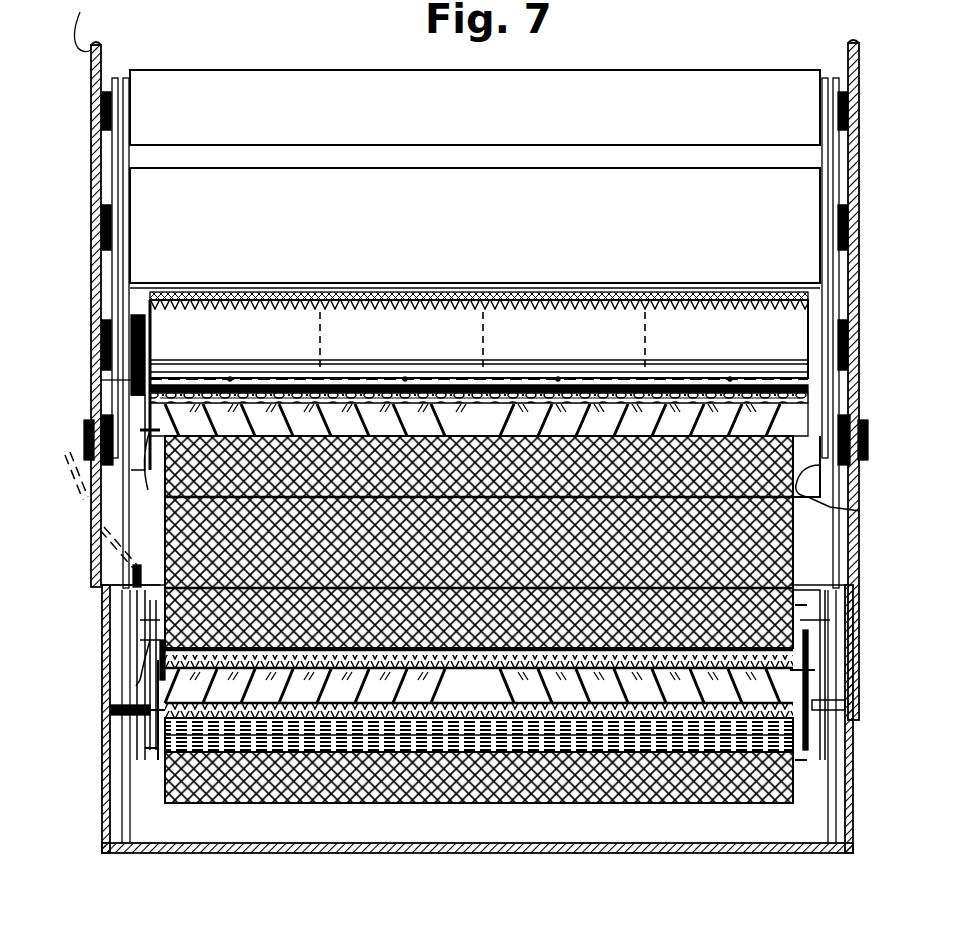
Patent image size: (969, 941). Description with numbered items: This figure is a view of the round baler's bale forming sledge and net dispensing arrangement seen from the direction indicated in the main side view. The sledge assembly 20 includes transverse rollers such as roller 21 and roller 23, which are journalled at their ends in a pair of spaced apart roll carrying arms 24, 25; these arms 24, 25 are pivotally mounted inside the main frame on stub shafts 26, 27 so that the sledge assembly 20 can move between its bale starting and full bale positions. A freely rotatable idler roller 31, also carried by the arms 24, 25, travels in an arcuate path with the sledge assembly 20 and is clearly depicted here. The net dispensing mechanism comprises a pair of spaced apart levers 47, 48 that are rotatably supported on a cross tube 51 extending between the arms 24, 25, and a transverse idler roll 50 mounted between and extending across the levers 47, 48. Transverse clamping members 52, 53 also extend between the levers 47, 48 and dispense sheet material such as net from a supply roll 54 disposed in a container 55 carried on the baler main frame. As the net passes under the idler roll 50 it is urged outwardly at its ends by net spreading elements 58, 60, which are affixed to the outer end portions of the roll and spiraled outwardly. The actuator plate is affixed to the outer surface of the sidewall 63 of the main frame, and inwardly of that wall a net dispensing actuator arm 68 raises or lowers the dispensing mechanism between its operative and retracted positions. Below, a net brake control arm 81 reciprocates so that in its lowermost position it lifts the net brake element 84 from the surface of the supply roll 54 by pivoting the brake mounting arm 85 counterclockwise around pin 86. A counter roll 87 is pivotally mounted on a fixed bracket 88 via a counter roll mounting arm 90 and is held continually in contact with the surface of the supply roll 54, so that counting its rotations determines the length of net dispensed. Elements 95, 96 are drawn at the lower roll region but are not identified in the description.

The sledge assembly 20 is at (108, 275).
The roller 21 is at (366, 221).
The roller 23 is at (808, 492).
The roll carrying arm 24 is at (113, 171).
The roll carrying arm 25 is at (816, 154).
The stub shaft 26 is at (82, 448).
The stub shaft 27 is at (868, 420).
The idler roller 31 is at (690, 112).
The lever 47 is at (150, 490).
The lever 48 is at (860, 504).
The idler roll 50 is at (494, 413).
The cross tube 51 is at (147, 300).
The clamping member 52 is at (360, 348).
The clamping member 53 is at (438, 382).
The supply roll 54 is at (627, 803).
The container 55 is at (98, 840).
The net spreading element 58 is at (436, 390).
The net spreading element 60 is at (652, 412).
The sidewall 63 is at (84, 16).
The net dispensing actuator arm 68 is at (100, 380).
The net brake control arm 81 is at (92, 513).
The net brake element 84 is at (798, 805).
The brake mounting arm 85 is at (150, 698).
The pin 86 is at (138, 670).
The counter roll 87 is at (480, 685).
The fixed bracket 88 is at (128, 772).
The counter roll mounting arm 90 is at (138, 620).
The left rollers 95 is at (360, 692).
The right rollers 96 is at (566, 692).